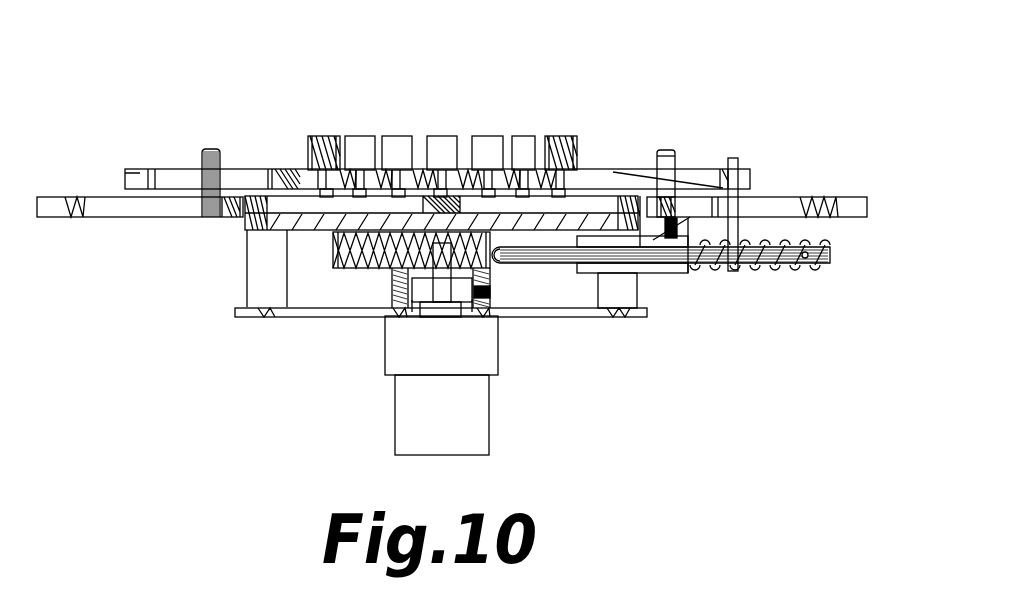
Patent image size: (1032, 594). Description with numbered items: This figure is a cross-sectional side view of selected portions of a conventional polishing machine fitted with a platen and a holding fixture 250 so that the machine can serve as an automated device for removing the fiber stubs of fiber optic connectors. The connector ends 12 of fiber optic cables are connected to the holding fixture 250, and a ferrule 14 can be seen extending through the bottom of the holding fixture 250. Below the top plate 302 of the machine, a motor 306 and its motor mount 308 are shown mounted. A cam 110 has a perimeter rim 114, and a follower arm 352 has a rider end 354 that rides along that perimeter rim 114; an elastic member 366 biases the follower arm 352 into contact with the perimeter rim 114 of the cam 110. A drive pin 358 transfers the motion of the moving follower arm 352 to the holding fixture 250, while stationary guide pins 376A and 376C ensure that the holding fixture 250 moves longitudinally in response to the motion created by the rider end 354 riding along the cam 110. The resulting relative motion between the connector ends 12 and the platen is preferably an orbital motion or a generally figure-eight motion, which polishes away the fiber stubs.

The connector ends 12 is at (398, 142).
The ferrule 14 is at (487, 197).
The cam 110 is at (355, 268).
The perimeter rim 114 is at (333, 253).
The holding fixture 250 is at (267, 168).
The top plate 302 is at (852, 207).
The motor 306 is at (415, 420).
The motor mount 308 is at (622, 277).
The follower arm 352 is at (827, 257).
The rider end 354 is at (502, 263).
The drive pin 358 is at (733, 158).
The elastic member 366 is at (777, 268).
The stationary guide pin 376A is at (197, 149).
The stationary guide pin 376C is at (675, 155).